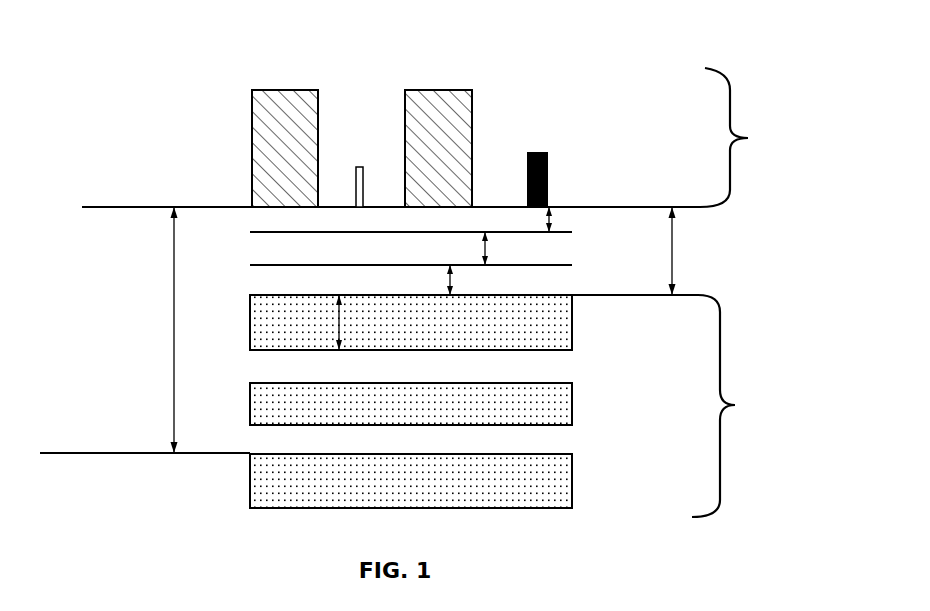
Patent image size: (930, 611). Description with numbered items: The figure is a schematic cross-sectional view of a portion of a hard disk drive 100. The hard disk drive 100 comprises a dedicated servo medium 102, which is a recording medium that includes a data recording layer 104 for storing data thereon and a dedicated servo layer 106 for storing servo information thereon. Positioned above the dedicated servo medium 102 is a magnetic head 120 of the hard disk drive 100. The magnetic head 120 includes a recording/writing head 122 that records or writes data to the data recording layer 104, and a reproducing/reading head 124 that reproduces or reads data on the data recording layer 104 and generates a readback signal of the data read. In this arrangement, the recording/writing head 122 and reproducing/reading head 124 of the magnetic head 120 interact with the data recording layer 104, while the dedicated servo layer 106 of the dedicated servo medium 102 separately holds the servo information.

The hard disk drive 100 is at (547, 55).
The magnetic head 120 is at (436, 130).
The recording/writing head 122 is at (548, 178).
The reproducing/reading head 124 is at (362, 137).
The dedicated servo medium 102 is at (515, 406).
The data recording layer 104 is at (572, 322).
The dedicated servo layer 106 is at (572, 403).